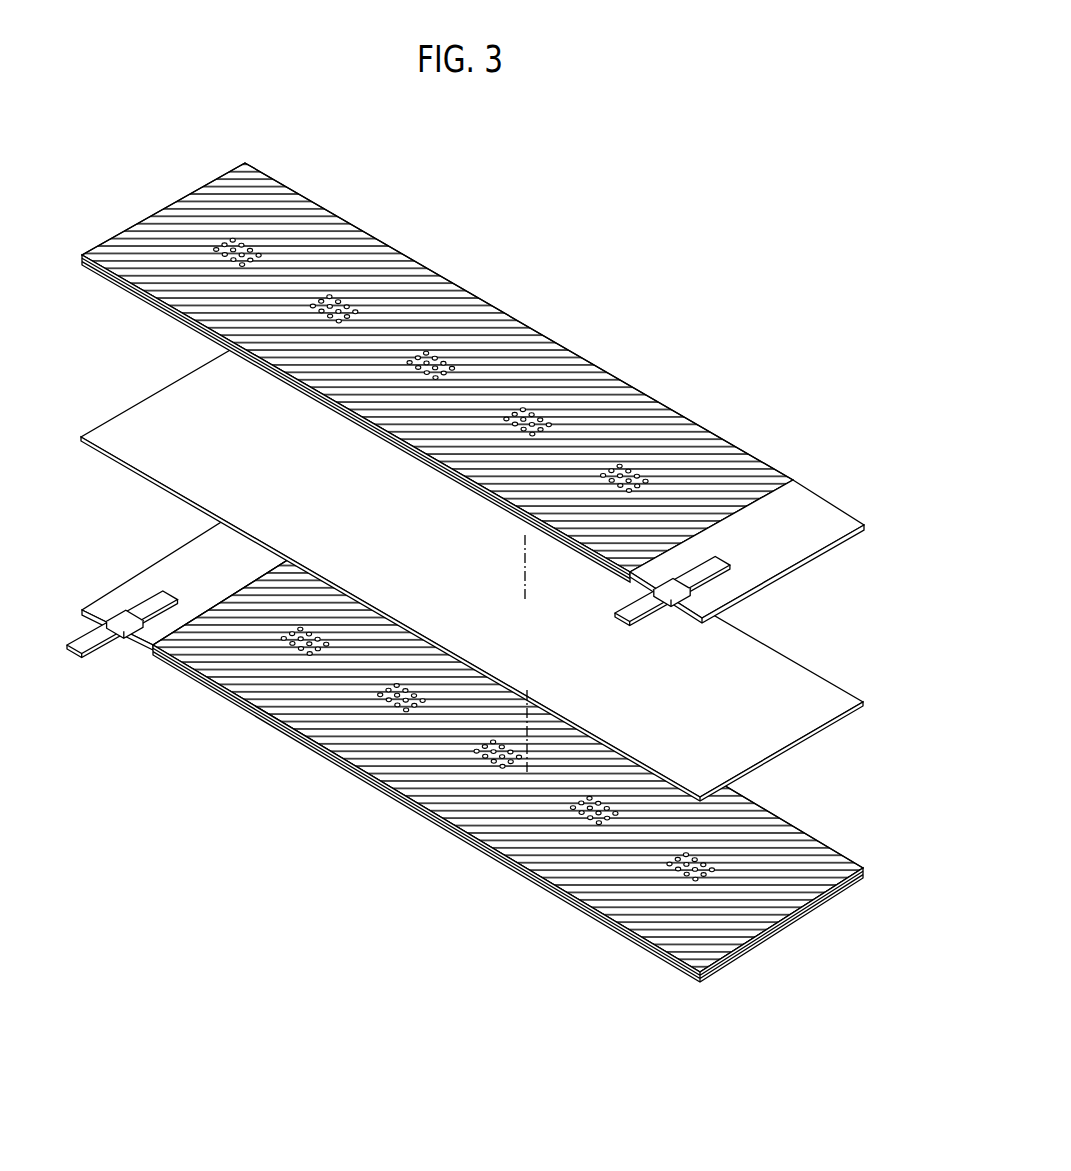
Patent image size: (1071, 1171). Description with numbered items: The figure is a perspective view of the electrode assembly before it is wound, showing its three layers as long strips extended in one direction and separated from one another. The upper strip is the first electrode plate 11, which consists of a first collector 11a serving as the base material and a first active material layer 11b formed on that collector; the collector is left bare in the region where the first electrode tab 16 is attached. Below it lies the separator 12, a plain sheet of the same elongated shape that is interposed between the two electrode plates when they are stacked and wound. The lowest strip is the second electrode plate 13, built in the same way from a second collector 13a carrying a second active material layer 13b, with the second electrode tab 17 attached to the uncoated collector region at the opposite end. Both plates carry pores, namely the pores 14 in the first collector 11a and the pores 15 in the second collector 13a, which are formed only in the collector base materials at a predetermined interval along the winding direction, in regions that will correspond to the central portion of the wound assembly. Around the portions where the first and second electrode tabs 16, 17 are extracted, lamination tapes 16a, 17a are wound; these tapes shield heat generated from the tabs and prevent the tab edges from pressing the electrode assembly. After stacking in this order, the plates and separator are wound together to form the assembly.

The first electrode plate 11 is at (473, 394).
The first collector 11a is at (815, 505).
The first active material layer 11b is at (437, 372).
The separator 12 is at (757, 733).
The second electrode plate 13 is at (465, 744).
The second collector 13a is at (147, 638).
The second active material layer 13b is at (508, 762).
The pores 14 is at (437, 356).
The pores 15 is at (487, 758).
The first electrode tab 16 is at (685, 502).
The lamination tape 16a is at (662, 590).
The second electrode tab 17 is at (122, 659).
The lamination tape 17a is at (121, 669).